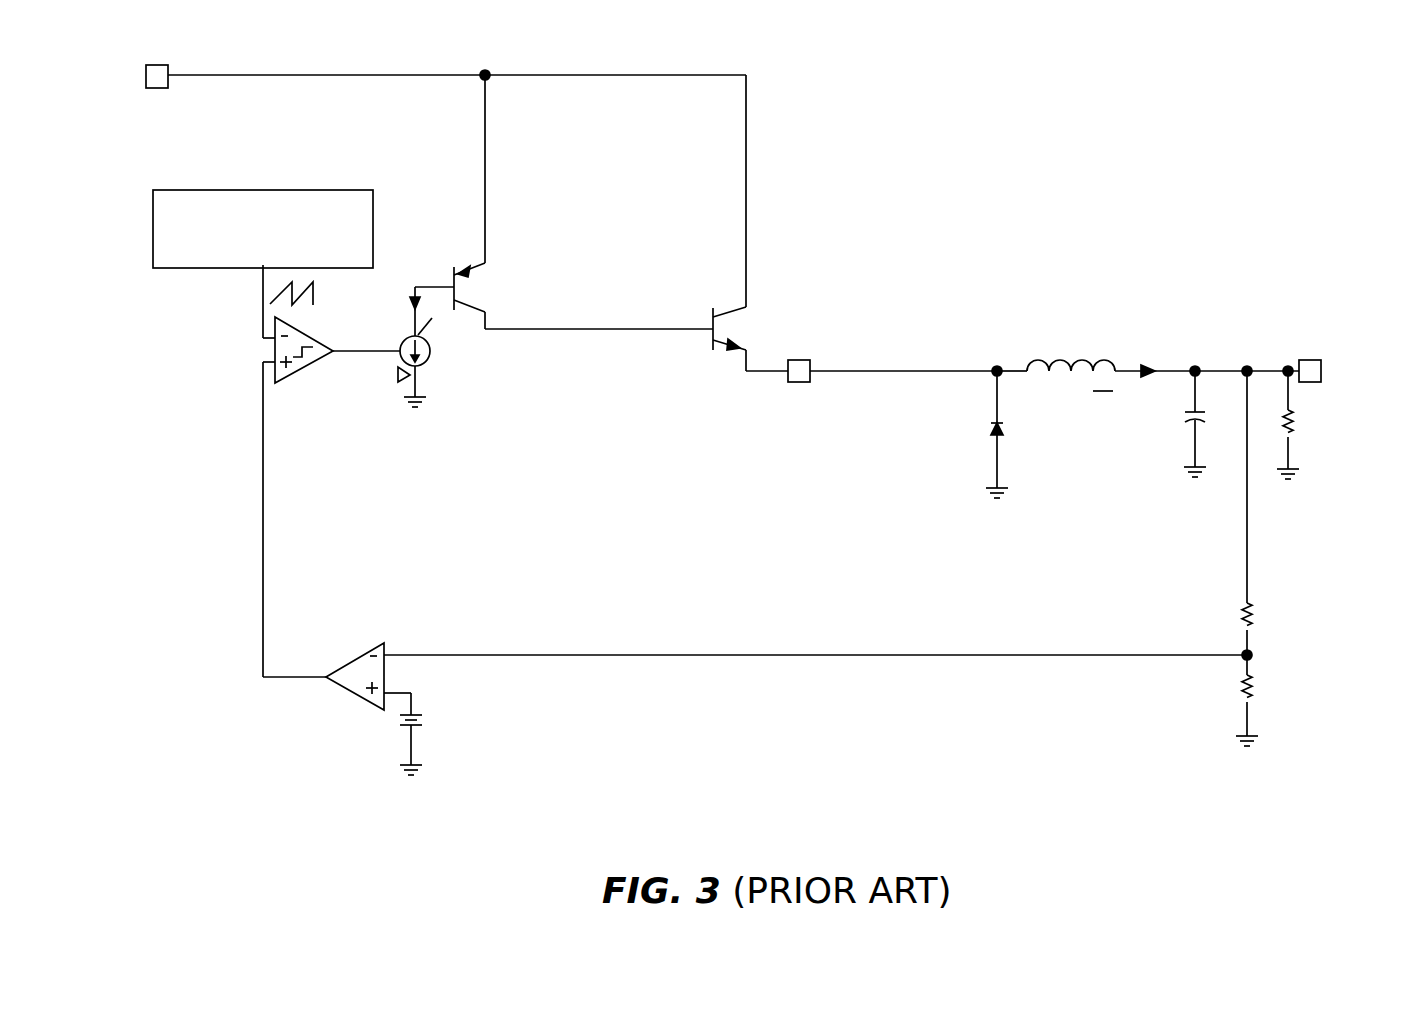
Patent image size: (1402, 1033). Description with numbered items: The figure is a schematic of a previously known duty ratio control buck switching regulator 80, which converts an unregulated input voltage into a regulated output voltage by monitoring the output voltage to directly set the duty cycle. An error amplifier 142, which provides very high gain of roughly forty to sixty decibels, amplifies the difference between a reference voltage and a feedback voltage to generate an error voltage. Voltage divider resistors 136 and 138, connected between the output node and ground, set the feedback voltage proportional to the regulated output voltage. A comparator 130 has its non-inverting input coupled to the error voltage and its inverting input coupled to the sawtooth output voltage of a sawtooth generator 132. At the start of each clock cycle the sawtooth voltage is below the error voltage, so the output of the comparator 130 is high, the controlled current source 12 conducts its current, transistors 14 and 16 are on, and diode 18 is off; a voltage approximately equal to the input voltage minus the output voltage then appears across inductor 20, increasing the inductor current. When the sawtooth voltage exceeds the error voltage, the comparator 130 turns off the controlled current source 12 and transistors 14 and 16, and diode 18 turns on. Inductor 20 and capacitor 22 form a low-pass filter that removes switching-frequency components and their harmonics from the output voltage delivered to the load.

The duty ratio control buck switching regulator 80 is at (1234, 236).
The sawtooth generator 132 is at (262, 190).
The comparator 130 is at (305, 367).
The controlled current source 12 is at (430, 352).
The transistor 14 is at (472, 302).
The transistor 16 is at (740, 308).
The diode 18 is at (990, 425).
The inductor 20 is at (1063, 355).
The capacitor 22 is at (1187, 417).
The voltage divider resistor 136 is at (1252, 612).
The voltage divider resistor 138 is at (1252, 687).
The error amplifier 142 is at (373, 650).